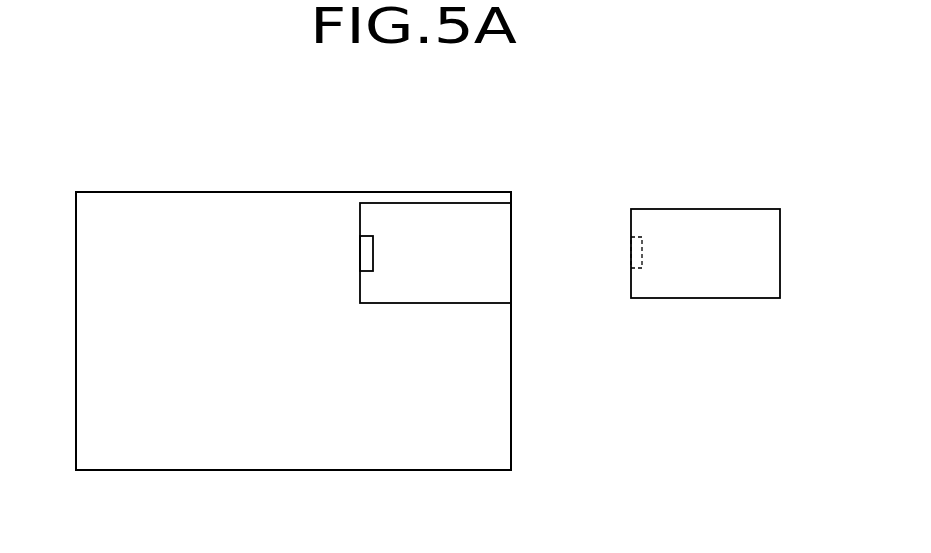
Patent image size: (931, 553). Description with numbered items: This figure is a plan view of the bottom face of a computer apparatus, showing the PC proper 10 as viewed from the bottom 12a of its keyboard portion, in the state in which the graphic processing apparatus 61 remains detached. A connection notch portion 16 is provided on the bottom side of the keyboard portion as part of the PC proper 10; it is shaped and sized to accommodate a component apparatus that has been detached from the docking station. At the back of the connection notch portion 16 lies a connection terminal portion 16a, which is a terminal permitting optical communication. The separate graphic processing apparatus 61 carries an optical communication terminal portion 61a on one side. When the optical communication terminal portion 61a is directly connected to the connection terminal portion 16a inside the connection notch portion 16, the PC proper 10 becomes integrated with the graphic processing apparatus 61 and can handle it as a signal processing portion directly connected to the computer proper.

The PC proper 10 is at (216, 192).
The bottom of the keyboard portion 12a is at (488, 412).
The connection notch portion 16 is at (500, 237).
The connection terminal portion 16a is at (378, 255).
The graphic processing apparatus 61 is at (718, 236).
The optical communication terminal portion 61a is at (633, 253).